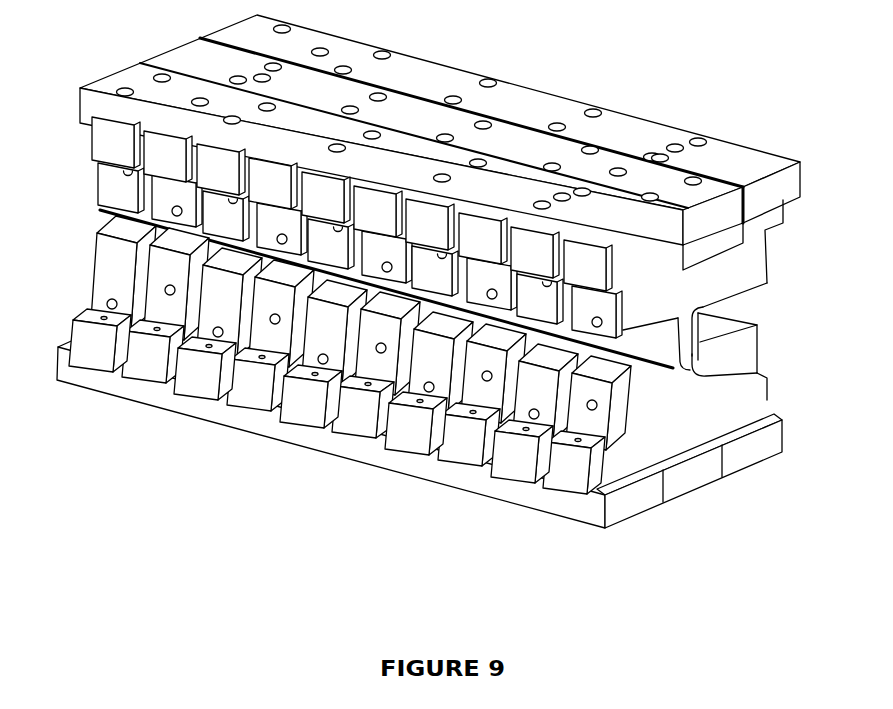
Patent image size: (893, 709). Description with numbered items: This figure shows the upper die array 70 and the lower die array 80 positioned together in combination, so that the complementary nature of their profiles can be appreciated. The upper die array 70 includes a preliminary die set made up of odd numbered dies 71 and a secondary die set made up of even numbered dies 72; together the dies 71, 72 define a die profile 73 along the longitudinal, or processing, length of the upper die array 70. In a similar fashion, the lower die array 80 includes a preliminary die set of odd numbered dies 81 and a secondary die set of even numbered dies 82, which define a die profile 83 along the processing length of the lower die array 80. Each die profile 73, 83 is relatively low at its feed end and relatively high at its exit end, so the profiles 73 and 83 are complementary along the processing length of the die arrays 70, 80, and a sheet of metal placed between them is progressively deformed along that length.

The upper die array 70 is at (436, 207).
The odd numbered dies 71 is at (107, 147).
The even numbered dies 72 is at (163, 198).
The die profile 73 is at (686, 350).
The lower die array 80 is at (419, 418).
The odd numbered dies 81 is at (105, 357).
The even numbered dies 82 is at (260, 402).
The die profile 83 is at (757, 374).